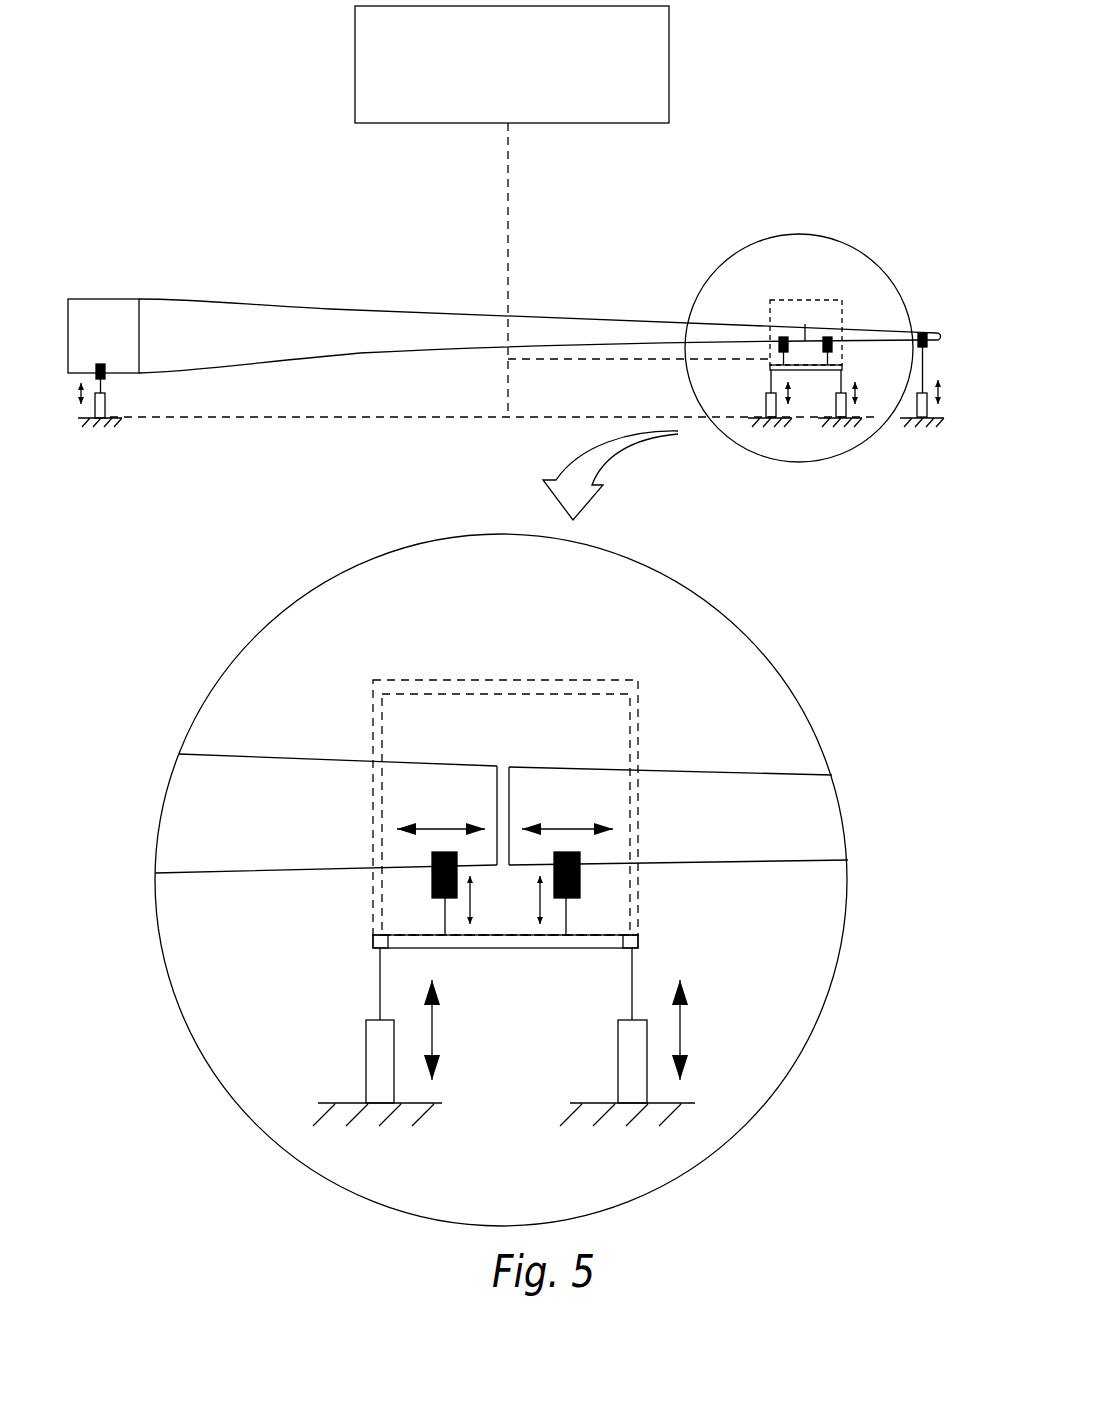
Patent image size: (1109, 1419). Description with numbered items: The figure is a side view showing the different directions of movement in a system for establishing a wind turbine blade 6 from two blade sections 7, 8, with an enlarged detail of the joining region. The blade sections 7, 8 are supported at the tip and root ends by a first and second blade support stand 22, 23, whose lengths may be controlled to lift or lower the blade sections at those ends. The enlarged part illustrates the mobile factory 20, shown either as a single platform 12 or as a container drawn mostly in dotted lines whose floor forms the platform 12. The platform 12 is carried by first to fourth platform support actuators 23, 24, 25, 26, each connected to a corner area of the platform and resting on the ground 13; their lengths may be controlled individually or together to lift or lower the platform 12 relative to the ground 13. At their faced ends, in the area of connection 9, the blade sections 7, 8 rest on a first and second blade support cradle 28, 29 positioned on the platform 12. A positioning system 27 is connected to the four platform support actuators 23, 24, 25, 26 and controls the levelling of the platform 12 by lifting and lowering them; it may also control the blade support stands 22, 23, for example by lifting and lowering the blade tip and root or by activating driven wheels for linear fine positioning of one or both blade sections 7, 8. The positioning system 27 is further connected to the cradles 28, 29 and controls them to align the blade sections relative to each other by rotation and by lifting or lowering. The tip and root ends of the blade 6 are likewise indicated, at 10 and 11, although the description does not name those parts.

The wind turbine blade 6 is at (335, 183).
The blade section 7 is at (862, 327).
The blade section 8 is at (272, 308).
The area of connection 9 is at (805, 324).
The tip end 10 is at (920, 332).
The root end 11 is at (100, 299).
The platform 12 is at (770, 367).
The ground 13 is at (120, 422).
The mobile factory 20 is at (408, 680).
The first blade support stand 22 is at (107, 397).
The second blade support stand 23 is at (923, 357).
The platform support actuator 24 is at (632, 990).
The platform support actuator 25 is at (362, 1030).
The platform support actuator 26 is at (614, 1030).
The positioning system 27 is at (669, 63).
The first blade support cradle 28 is at (432, 890).
The second blade support cradle 29 is at (580, 882).